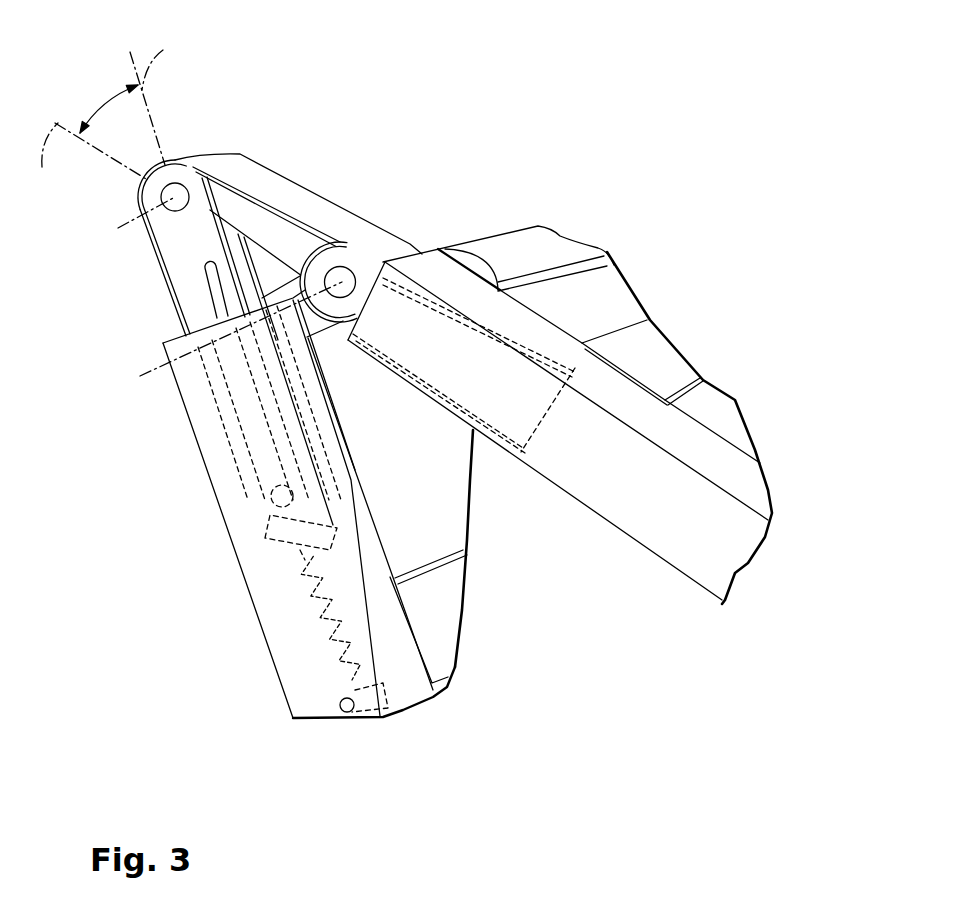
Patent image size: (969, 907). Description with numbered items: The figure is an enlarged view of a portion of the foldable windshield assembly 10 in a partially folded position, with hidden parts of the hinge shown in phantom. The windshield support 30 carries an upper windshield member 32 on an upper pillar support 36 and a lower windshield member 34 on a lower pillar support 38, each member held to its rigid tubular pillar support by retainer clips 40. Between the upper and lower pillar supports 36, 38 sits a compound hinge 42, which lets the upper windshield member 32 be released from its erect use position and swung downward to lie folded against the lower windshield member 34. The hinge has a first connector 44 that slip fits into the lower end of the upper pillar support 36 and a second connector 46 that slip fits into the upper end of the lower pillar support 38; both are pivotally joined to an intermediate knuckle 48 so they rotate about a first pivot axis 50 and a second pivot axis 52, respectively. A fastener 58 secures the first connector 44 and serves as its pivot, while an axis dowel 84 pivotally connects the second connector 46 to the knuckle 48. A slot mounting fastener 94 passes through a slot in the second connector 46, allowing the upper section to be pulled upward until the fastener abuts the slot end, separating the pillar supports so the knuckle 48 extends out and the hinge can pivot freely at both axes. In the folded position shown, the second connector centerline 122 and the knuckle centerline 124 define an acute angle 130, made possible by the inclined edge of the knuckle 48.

The foldable windshield assembly 10 is at (300, 93).
The windshield support 30 is at (200, 451).
The upper windshield member 32 is at (602, 307).
The lower windshield member 34 is at (417, 530).
The upper pillar supports 36 is at (697, 543).
The lower pillar supports 38 is at (227, 500).
The retainer clips 40 is at (657, 357).
The compound hinge 42 is at (268, 160).
The first connector 44 is at (543, 423).
The second connector 46 is at (225, 383).
The knuckle 48 is at (278, 253).
The first pivot axis 50 is at (152, 362).
The second pivot axis 52 is at (118, 228).
The fastener 58 is at (342, 266).
The axis dowel 84 is at (173, 193).
The slot mounting fastener 94 is at (263, 552).
The second connector centerline 122 is at (153, 96).
The knuckle centerline 124 is at (90, 158).
The acute angle 130 is at (103, 103).